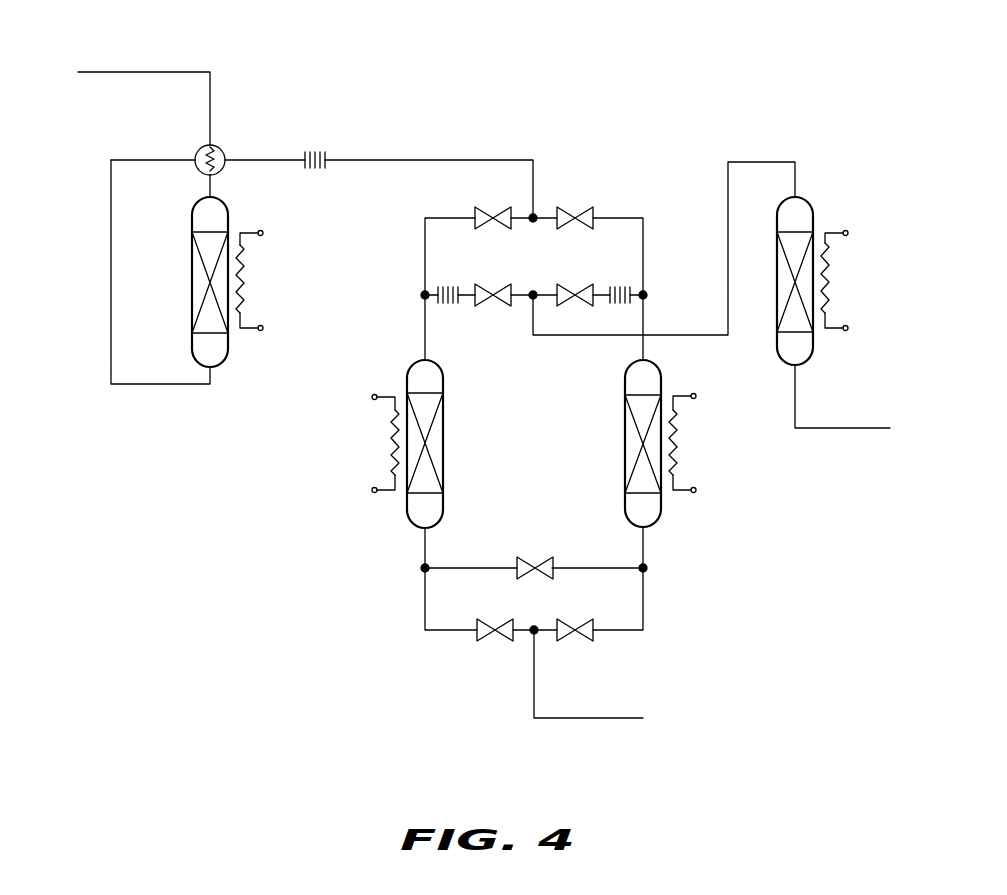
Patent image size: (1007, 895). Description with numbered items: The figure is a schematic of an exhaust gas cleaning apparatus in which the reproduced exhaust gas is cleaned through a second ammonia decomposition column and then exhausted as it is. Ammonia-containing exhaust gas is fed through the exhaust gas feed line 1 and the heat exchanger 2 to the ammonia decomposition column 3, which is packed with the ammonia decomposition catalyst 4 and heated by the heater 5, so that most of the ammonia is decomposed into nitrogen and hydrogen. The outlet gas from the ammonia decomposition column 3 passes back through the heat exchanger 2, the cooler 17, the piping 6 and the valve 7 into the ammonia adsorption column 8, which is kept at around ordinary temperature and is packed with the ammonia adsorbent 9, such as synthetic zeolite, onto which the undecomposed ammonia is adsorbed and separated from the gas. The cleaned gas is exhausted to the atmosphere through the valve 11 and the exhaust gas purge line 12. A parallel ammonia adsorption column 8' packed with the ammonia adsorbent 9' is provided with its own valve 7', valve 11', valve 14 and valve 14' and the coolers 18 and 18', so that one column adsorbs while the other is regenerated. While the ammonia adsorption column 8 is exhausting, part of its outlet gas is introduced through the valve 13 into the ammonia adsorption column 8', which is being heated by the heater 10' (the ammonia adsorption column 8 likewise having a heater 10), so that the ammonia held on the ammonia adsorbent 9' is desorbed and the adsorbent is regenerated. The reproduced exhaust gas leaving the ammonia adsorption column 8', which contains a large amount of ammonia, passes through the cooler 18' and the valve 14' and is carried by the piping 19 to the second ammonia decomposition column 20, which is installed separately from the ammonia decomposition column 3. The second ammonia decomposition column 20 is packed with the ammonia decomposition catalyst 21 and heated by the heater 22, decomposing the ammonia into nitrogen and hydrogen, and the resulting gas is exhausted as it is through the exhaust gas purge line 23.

The exhaust gas feed line 1 is at (92, 72).
The heat exchanger 2 is at (198, 152).
The ammonia decomposition column 3 is at (203, 214).
The ammonia decomposition catalyst 4 is at (196, 271).
The heater 5 is at (246, 263).
The piping 6 is at (130, 385).
The valve 7 is at (474, 200).
The valve 7' is at (575, 190).
The ammonia adsorption column 8 is at (403, 442).
The ammonia adsorption column 8' is at (668, 434).
The ammonia adsorbent 9 is at (451, 443).
The ammonia adsorbent 9' is at (617, 444).
The heater 10 is at (347, 444).
The heater 10' is at (726, 443).
The valve 11 is at (471, 656).
The valve 11' is at (609, 651).
The exhaust gas purge line 12 is at (580, 720).
The valve 13 is at (537, 560).
The valve 14 is at (447, 262).
The valve 14' is at (627, 259).
The cooler 17 is at (320, 152).
The cooler 18 is at (416, 284).
The cooler 18' is at (657, 277).
The piping 19 is at (760, 160).
The second ammonia decomposition column 20 is at (805, 215).
The ammonia decomposition catalyst 21 is at (798, 322).
The heater 22 is at (830, 275).
The exhaust gas purge line 23 is at (855, 428).